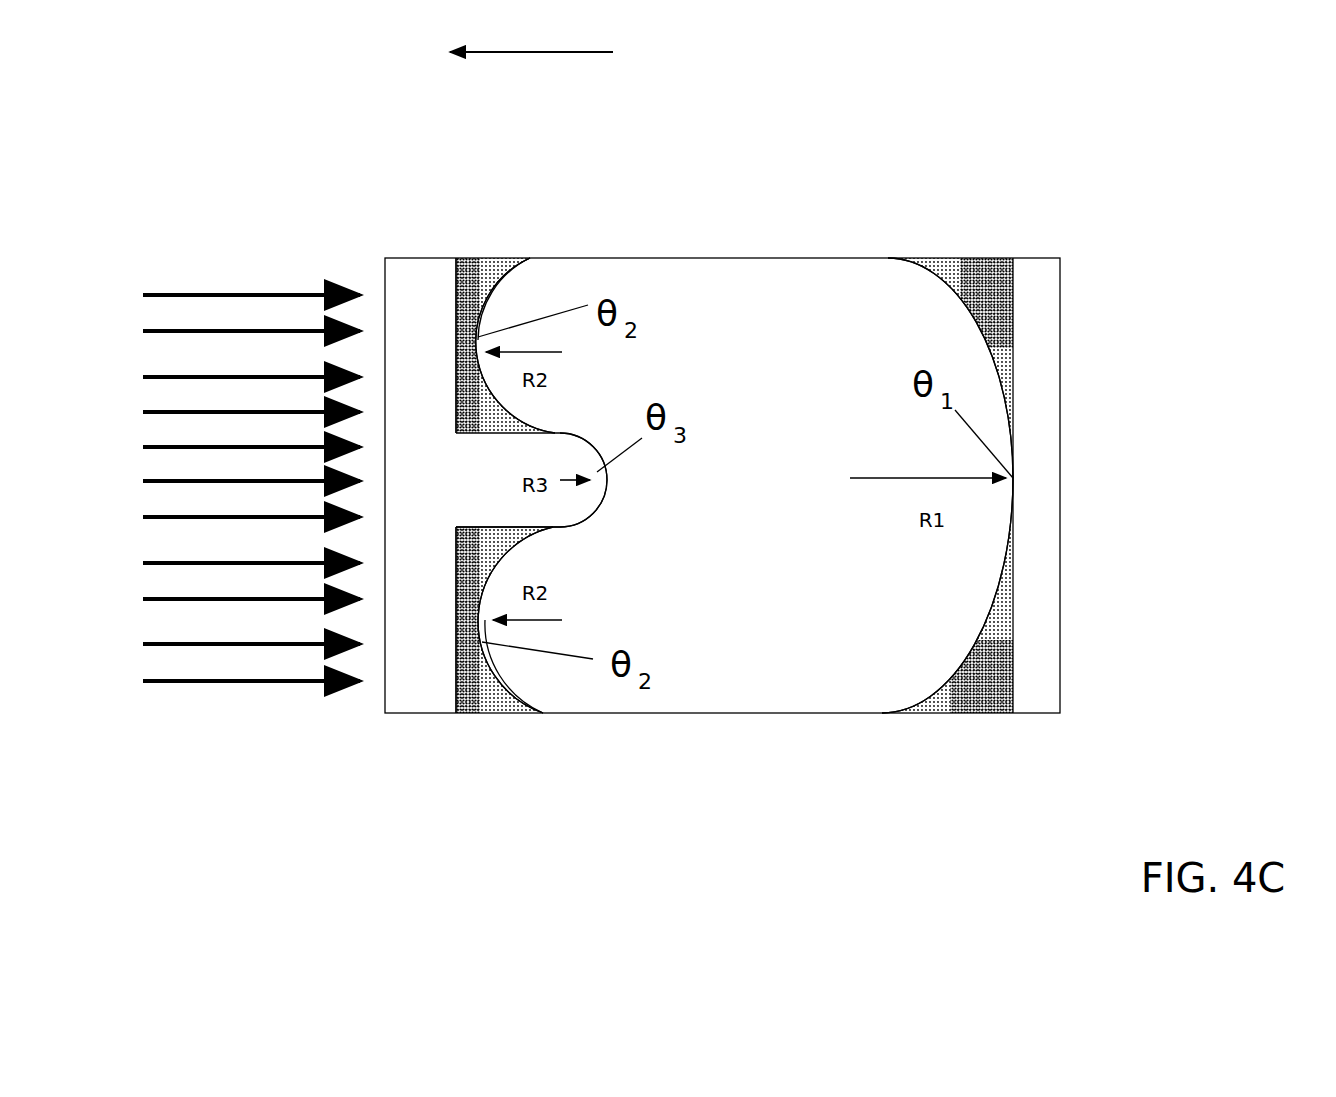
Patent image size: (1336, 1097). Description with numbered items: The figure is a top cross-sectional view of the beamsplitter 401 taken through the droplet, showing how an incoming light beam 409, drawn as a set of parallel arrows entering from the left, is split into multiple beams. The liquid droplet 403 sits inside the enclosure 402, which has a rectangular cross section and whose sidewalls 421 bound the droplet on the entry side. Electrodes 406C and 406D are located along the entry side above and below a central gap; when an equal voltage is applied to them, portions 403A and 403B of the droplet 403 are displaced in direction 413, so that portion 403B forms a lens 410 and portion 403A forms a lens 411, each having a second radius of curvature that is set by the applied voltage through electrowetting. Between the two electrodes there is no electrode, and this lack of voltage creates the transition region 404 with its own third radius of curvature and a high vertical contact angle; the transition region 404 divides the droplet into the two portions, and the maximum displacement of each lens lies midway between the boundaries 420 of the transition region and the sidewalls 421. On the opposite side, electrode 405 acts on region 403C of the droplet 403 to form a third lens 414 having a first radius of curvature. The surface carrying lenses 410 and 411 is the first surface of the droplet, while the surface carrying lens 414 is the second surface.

The beamsplitter 401 is at (755, 110).
The enclosure 402 is at (420, 328).
The droplet 403 is at (758, 418).
The portion of droplet 403A is at (560, 671).
The portion of droplet 403B is at (570, 285).
The region of droplet 403C is at (1003, 517).
The transition region 404 is at (502, 490).
The electrode 405 is at (977, 302).
The electrode 406C is at (490, 268).
The electrode 406D is at (483, 687).
The light beam 409 is at (258, 355).
The lens 410 is at (527, 303).
The lens 411 is at (540, 680).
The direction 413 is at (531, 35).
The third lens 414 is at (932, 333).
The boundaries of transition region 420 is at (482, 438).
The sidewalls 421 is at (468, 257).